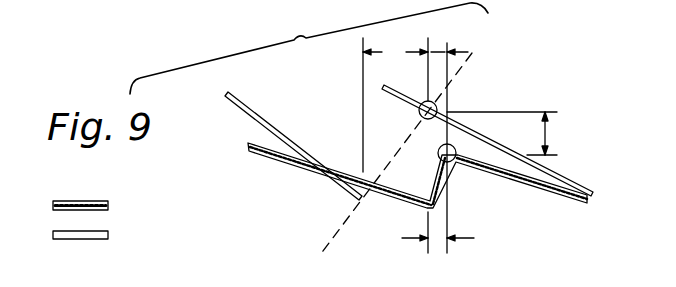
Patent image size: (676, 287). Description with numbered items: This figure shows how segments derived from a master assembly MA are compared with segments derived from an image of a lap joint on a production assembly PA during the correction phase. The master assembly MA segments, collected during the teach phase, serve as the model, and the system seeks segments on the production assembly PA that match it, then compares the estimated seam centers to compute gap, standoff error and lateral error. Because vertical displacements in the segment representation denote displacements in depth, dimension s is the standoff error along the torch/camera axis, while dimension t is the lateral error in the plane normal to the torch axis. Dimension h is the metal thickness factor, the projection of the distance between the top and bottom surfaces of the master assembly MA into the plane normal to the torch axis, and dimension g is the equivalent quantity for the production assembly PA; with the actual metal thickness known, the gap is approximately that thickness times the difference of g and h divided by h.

The dimension g is at (395, 48).
The dimension t is at (436, 53).
The dimension s is at (547, 129).
The dimension h is at (437, 238).
The master assembly MA is at (320, 181).
The production assembly PA is at (323, 166).